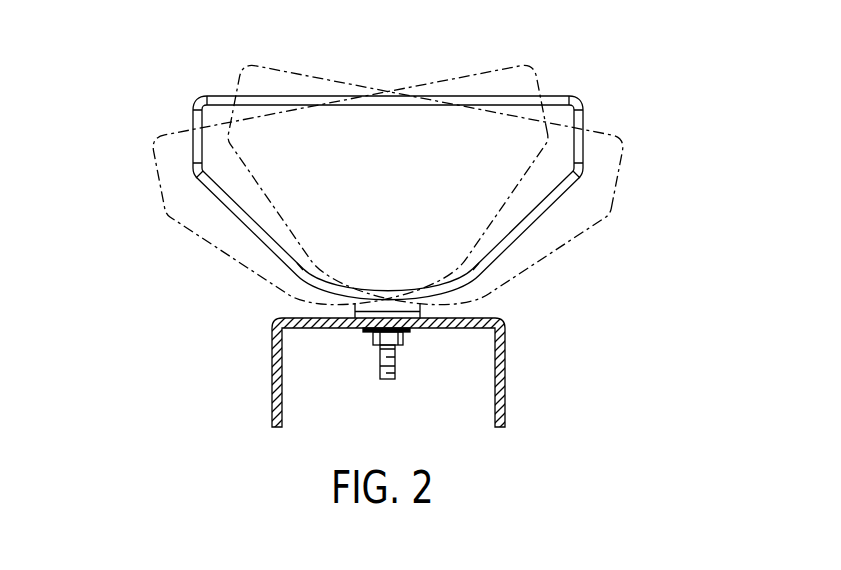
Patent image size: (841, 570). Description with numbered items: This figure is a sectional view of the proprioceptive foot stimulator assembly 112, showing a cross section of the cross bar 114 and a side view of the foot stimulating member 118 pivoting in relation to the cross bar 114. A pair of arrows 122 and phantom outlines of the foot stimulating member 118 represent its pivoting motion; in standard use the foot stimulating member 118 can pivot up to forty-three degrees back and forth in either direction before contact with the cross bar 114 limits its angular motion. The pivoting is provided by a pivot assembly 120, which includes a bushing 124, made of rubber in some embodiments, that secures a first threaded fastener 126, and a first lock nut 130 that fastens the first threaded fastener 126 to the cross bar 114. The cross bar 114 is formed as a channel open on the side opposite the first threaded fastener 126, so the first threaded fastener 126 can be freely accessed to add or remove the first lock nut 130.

The proprioceptive foot stimulator assembly 112 is at (172, 350).
The cross bar 114 is at (272, 400).
The foot stimulating member 118 is at (563, 112).
The pivot assembly 120 is at (384, 367).
The arrows 122 is at (183, 183).
The bushing 124 is at (355, 313).
The first threaded fastener 126 is at (387, 379).
The first lock nut 130 is at (373, 337).